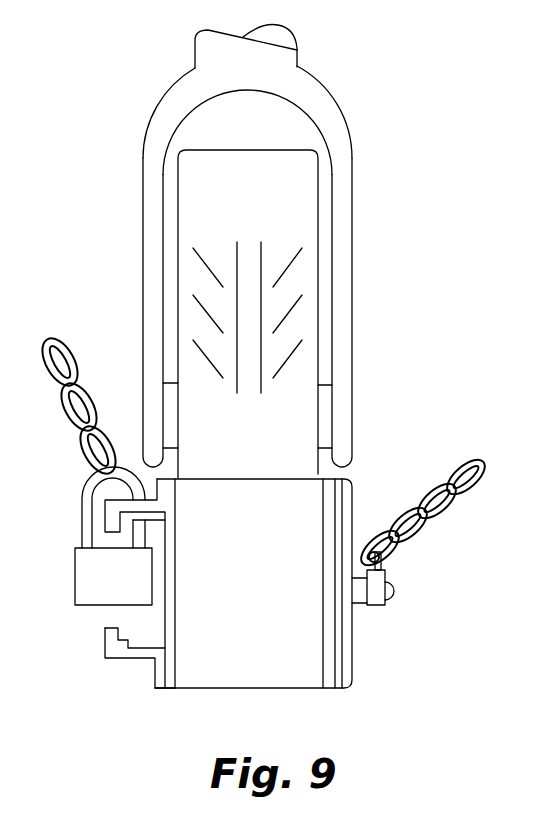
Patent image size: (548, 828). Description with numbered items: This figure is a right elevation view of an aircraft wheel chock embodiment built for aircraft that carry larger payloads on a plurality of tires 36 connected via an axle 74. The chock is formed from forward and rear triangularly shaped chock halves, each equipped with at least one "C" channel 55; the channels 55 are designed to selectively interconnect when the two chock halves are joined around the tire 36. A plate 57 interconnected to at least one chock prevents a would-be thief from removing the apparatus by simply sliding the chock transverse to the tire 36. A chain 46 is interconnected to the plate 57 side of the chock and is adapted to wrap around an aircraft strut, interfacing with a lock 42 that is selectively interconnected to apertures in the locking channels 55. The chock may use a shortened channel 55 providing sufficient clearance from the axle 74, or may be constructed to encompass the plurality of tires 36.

The axle 74 is at (325, 408).
The tire 36 is at (335, 474).
The plate 57 is at (352, 635).
The "C" channel 55 is at (105, 660).
The lock 42 is at (75, 577).
The chain 46 is at (443, 522).